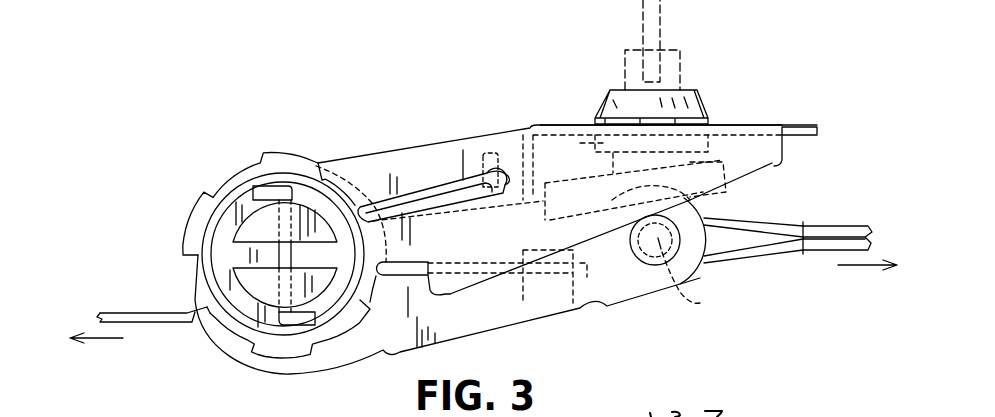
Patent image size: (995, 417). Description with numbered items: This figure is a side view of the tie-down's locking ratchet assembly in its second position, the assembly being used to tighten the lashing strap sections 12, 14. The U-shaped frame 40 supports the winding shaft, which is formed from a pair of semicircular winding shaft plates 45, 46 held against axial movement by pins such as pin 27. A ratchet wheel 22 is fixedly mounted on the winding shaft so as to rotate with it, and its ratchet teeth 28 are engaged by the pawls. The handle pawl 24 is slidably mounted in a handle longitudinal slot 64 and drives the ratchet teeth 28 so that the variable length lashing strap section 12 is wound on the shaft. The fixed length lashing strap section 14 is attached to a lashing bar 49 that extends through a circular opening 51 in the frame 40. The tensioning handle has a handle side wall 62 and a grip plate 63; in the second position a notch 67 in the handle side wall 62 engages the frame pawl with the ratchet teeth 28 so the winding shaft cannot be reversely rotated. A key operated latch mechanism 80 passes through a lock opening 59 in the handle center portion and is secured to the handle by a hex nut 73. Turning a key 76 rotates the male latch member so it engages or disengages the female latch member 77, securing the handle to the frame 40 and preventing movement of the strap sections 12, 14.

The variable length lashing strap section 12 is at (122, 310).
The fixed length lashing strap section 14 is at (828, 227).
The ratchet wheel 22 is at (323, 183).
The handle pawl 24 is at (452, 193).
The pin 27 is at (288, 318).
The ratchet teeth 28 is at (318, 162).
The frame 40 is at (637, 298).
The semicircular winding shaft plate 45 is at (253, 223).
The semicircular winding shaft plate 46 is at (258, 292).
The lashing bar 49 is at (690, 303).
The circular opening 51 is at (678, 250).
The lock opening 59 is at (708, 125).
The handle side wall 62 is at (760, 158).
The grip plate 63 is at (805, 127).
The handle longitudinal slot 64 is at (508, 178).
The notch 67 is at (442, 288).
The hex nut 73 is at (580, 143).
The key 76 is at (675, 65).
The female latch member 77 is at (713, 173).
The key operated latch mechanism 80 is at (700, 90).